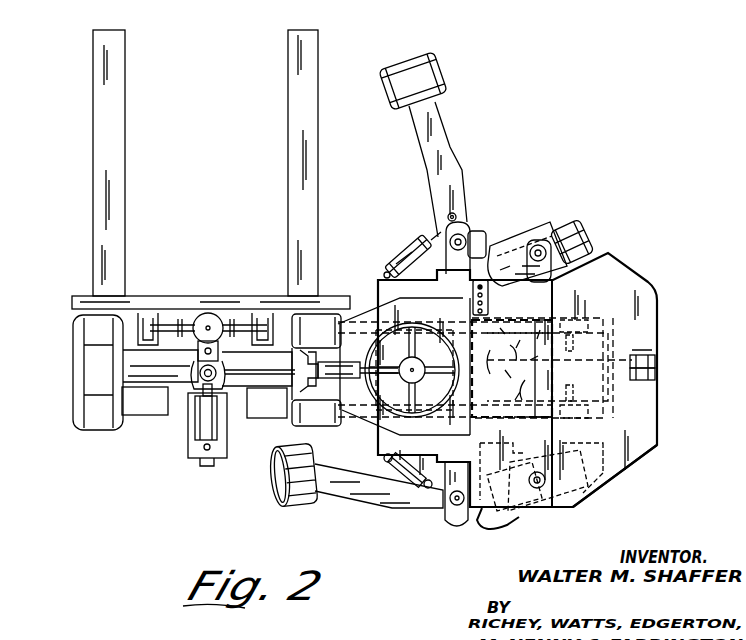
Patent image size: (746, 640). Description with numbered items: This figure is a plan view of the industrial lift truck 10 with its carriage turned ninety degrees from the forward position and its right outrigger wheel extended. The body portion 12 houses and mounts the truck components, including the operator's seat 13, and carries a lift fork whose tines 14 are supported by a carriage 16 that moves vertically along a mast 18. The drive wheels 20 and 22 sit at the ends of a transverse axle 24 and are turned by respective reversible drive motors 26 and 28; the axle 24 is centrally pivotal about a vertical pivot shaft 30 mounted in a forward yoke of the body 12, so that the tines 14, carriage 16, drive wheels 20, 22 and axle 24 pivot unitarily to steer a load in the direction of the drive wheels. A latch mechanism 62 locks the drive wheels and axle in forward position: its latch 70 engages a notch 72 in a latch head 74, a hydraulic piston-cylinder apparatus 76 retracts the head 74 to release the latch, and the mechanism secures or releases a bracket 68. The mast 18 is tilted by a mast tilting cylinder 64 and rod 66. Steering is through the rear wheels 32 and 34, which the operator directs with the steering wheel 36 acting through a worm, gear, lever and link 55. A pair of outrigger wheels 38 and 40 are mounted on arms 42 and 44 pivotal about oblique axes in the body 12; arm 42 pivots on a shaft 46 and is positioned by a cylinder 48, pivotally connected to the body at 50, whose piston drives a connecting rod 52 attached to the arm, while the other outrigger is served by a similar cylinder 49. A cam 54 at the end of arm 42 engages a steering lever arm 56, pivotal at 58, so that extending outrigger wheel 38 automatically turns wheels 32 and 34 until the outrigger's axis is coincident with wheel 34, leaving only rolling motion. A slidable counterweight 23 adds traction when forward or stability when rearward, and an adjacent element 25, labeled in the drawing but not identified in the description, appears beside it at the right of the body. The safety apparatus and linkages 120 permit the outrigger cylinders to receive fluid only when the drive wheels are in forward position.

The industrial lift truck 10 is at (640, 270).
The body portion 12 is at (632, 460).
The operator's seat 13 is at (510, 417).
The fork tines 14 is at (125, 100).
The carriage 16 is at (170, 294).
The mast 18 is at (208, 328).
The drive wheel 20 is at (318, 426).
The drive wheel 22 is at (85, 353).
The counterweight 23 is at (615, 390).
The transverse axle 24 is at (182, 392).
The switch 25 is at (615, 357).
The reversible drive motor 26 is at (258, 410).
The reversible drive motor 28 is at (145, 410).
The vertical pivot shaft 30 is at (215, 368).
The rear wheel 32 is at (585, 226).
The rear wheel 34 is at (590, 500).
The steering wheel 36 is at (438, 405).
The outrigger wheel 38 is at (413, 70).
The outrigger wheel 40 is at (290, 505).
The outrigger arm 42 is at (445, 140).
The outrigger arm 44 is at (395, 508).
The shaft 46 is at (462, 237).
The cylinder 48 is at (402, 252).
The outrigger cylinder 49 is at (385, 462).
The pivotal connection 50 is at (384, 274).
The connecting rod 52 is at (446, 221).
The cam 54 is at (485, 234).
The link 55 is at (460, 522).
The steering lever arm 56 is at (515, 245).
The pivot 58 is at (545, 250).
The latch mechanism 62 is at (295, 374).
The mast tilting cylinder 64 is at (205, 430).
The rod 66 is at (212, 388).
The bracket 68 is at (227, 440).
The latch 70 is at (207, 466).
The notch 72 is at (302, 356).
The latch head 74 is at (316, 360).
The hydraulic piston-cylinder apparatus 76 is at (340, 378).
The safety apparatus and linkages 120 is at (490, 298).